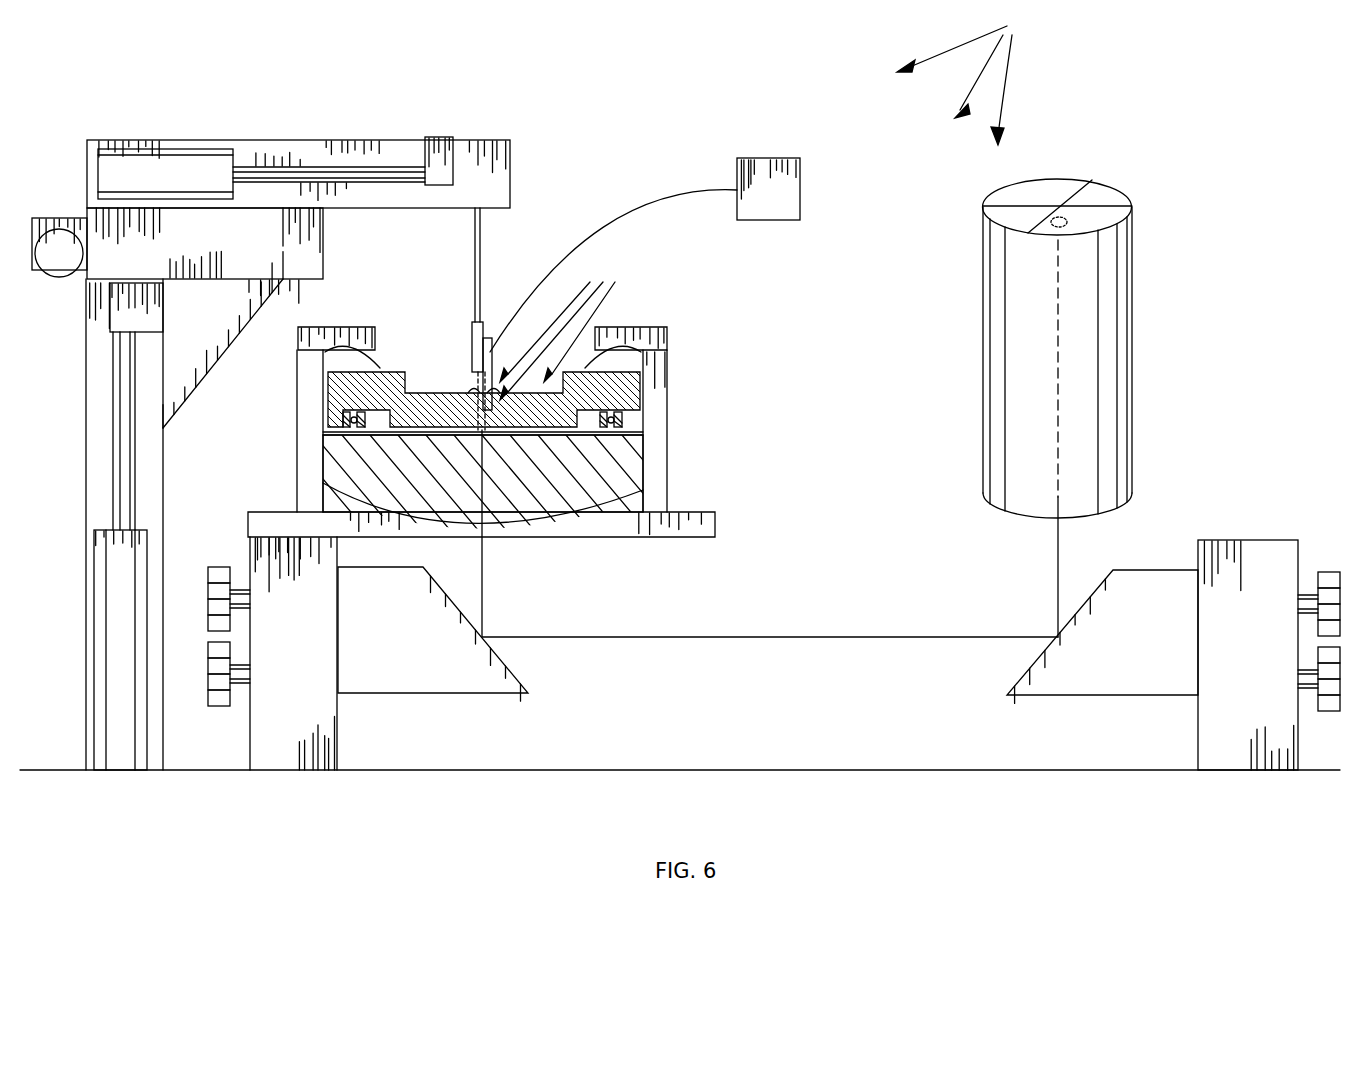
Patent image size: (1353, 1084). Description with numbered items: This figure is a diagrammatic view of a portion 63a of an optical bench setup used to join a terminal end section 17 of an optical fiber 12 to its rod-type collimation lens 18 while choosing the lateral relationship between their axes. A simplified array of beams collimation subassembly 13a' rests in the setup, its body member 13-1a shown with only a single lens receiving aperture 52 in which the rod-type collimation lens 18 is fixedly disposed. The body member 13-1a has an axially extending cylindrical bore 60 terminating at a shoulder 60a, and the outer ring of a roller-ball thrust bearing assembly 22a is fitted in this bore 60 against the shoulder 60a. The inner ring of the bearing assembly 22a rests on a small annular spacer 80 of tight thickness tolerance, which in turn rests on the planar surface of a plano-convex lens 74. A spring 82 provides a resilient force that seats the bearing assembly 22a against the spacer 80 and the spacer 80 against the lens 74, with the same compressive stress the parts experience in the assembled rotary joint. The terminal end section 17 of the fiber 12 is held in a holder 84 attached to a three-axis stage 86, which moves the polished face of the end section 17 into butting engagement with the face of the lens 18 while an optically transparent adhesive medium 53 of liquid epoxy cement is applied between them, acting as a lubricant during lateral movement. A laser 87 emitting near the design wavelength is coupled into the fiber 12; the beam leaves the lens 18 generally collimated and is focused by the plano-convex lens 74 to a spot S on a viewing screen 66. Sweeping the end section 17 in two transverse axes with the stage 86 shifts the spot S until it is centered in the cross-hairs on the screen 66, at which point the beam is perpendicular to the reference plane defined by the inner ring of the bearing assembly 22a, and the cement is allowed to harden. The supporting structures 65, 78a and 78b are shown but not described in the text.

The three-axis stage 86 is at (290, 158).
The holder 84 is at (475, 241).
The optically transparent adhesive medium 53 is at (468, 346).
The terminal end section 17 is at (499, 352).
The rod-type collimation lens 18 is at (466, 397).
The optical fiber 12 is at (661, 190).
The laser 87 is at (770, 161).
The array of beams collimation subassembly 13a' is at (564, 314).
The portion of the optical bench setup 63a is at (975, 79).
The fixture wall 65 is at (637, 327).
The spring 82 is at (330, 353).
The body member 13-1a is at (630, 384).
The shoulder 60a is at (343, 428).
The cylindrical bore 60 is at (632, 428).
The annular spacer 80 is at (640, 440).
The plano-convex lens 74 is at (595, 500).
The roller-ball thrust bearing assembly 22a is at (343, 435).
The lens receiving aperture 52 is at (488, 425).
The left support block 78a is at (450, 695).
The right support block 78b is at (1083, 697).
The viewing screen 66 is at (1113, 363).
The spot S is at (1067, 222).